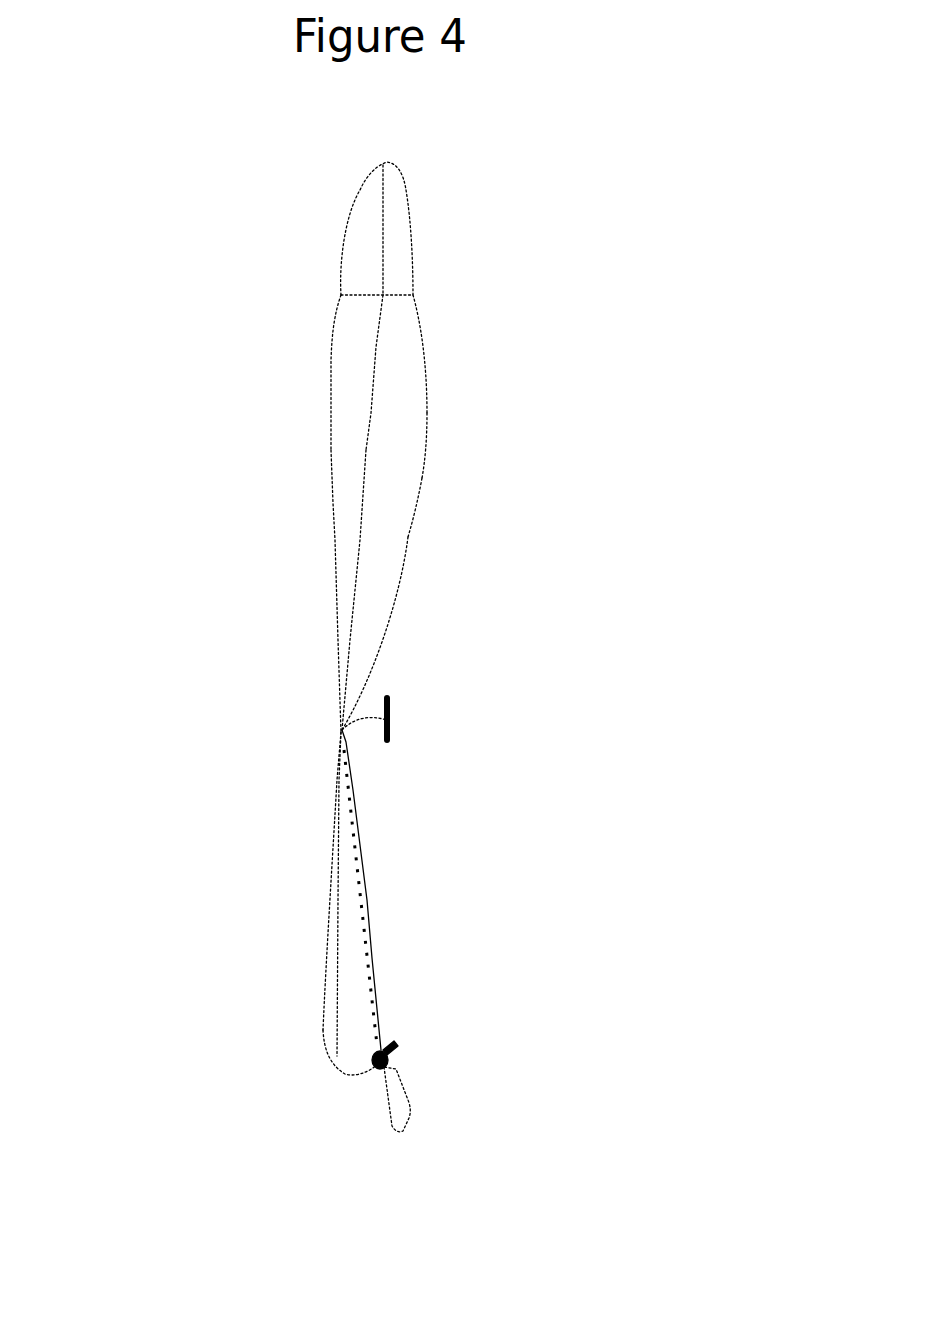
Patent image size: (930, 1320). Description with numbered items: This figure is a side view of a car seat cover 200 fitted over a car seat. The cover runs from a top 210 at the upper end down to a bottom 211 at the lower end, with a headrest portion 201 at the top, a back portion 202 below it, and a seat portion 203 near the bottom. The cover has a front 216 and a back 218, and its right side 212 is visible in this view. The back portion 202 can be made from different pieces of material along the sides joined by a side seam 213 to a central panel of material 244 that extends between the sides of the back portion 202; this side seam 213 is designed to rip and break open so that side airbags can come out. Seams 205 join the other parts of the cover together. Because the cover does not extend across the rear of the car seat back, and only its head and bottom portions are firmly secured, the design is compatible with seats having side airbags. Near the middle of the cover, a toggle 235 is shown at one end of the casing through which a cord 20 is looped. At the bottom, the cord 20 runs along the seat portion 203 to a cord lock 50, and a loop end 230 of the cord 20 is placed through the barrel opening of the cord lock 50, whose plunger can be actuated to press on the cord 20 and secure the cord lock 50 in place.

The car seat cover 200 is at (328, 393).
The headrest portion 201 is at (402, 197).
The top 210 is at (373, 168).
The side seam 213 is at (377, 348).
The right side 212 is at (405, 375).
The back portion 202 is at (411, 442).
The central panel of material 244 is at (402, 478).
The front 216 is at (332, 503).
The seams 205 is at (362, 535).
The back 218 is at (402, 573).
The toggle 235 is at (389, 711).
The seat portion 203 is at (345, 911).
The cord 20 is at (372, 958).
The cord lock 50 is at (389, 1058).
The bottom 211 is at (348, 1075).
The loop end 230 is at (403, 1130).